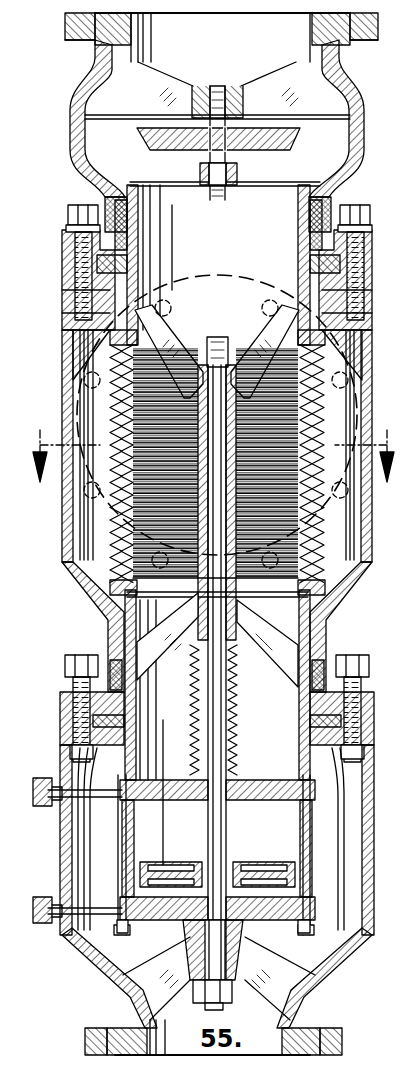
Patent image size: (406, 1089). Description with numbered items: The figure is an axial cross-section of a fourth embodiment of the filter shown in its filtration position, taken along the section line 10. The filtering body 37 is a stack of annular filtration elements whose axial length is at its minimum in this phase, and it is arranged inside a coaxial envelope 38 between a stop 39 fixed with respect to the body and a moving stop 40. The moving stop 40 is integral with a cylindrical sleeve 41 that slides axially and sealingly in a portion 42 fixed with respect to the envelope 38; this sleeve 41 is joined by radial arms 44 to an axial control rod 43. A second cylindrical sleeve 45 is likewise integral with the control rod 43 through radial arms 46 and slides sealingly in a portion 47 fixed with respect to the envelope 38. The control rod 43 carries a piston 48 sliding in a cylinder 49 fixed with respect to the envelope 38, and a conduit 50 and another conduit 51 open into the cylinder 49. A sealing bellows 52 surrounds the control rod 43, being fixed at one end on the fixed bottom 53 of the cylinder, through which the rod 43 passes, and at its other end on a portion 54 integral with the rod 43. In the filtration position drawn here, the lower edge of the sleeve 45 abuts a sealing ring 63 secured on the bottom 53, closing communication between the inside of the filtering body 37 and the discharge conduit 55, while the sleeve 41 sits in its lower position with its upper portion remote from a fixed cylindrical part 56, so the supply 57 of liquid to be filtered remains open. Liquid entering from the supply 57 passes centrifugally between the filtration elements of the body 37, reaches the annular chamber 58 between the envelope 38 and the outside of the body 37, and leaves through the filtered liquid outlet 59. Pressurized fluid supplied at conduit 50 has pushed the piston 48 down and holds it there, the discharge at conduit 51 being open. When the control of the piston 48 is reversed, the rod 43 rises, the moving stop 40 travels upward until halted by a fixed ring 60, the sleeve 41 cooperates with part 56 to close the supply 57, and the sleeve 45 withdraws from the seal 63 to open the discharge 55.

The section line 10- 10 is at (218, 469).
The filtering body 37 is at (110, 408).
The envelope 38 is at (74, 375).
The stop 39 is at (73, 593).
The moving stop 40 is at (110, 320).
The cylindrical sleeve 41 is at (300, 244).
The portion fixed with respect to the envelope 42 is at (105, 197).
The axial control rod 43 is at (242, 345).
The radial arms 44 is at (160, 345).
The cylindrical sleeve 45 is at (135, 752).
The radial arms 46 is at (148, 652).
The portion fixed with respect to the envelope 47 is at (110, 655).
The piston 48 is at (182, 868).
The cylinder 49 is at (300, 832).
The conduit 50 is at (45, 780).
The conduit 51 is at (43, 925).
The sealing bellows 52 is at (236, 688).
The fixed bottom of the cylinder 53 is at (168, 792).
The portion integral with the rod 54 is at (240, 612).
The discharge conduit 55 is at (217, 987).
The fixed cylindrical part 56 is at (137, 133).
The supply of the liquid to be filtered 57 is at (221, 37).
The annular chamber 58 is at (93, 513).
The filtered liquid outlet 59 is at (325, 497).
The fixed ring 60 is at (76, 267).
The sealing ring 63 is at (310, 781).